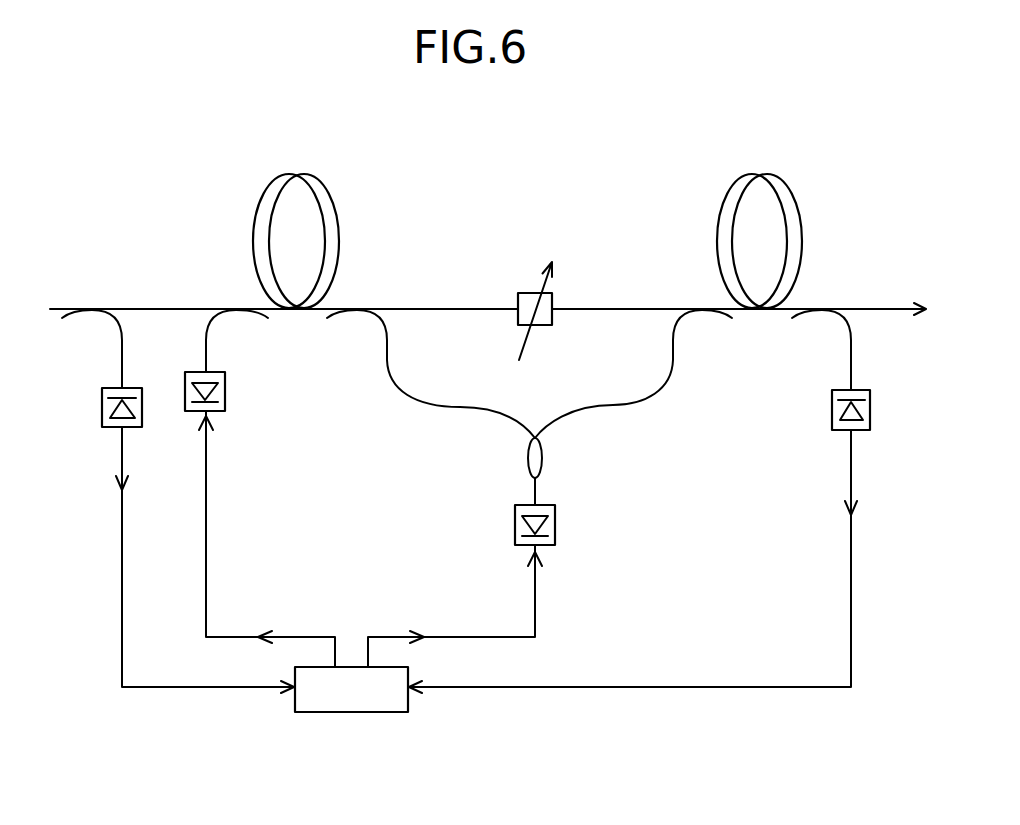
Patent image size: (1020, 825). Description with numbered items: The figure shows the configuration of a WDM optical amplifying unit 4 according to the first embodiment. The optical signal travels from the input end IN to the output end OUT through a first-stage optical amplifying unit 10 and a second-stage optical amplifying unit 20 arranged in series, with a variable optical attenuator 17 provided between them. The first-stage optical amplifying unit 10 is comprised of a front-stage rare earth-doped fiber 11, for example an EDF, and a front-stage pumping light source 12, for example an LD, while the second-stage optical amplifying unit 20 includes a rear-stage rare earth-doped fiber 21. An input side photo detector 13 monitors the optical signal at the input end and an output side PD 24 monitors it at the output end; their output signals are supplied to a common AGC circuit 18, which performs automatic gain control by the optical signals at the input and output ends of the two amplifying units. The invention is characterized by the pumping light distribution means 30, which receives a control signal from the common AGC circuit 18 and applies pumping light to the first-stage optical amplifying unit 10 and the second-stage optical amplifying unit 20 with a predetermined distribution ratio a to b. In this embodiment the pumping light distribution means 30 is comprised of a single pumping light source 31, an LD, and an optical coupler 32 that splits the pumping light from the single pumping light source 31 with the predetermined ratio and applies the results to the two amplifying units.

The WDM optical amplifying unit 4 is at (545, 179).
The first-stage optical amplifying unit 10 is at (345, 169).
The front-stage rare earth-doped fiber 11 is at (310, 240).
The front-stage pumping light source 12 is at (225, 388).
The input side photo detector 13 is at (102, 396).
The variable optical attenuator 17 is at (552, 304).
The common AGC circuit 18 is at (358, 712).
The second-stage optical amplifying unit 20 is at (817, 169).
The rear-stage rare earth-doped fiber 21 is at (745, 243).
The output side PD 24 is at (870, 410).
The pumping light distribution means 30 is at (609, 440).
The single pumping light source 31 is at (515, 522).
The optical coupler 32 is at (528, 455).